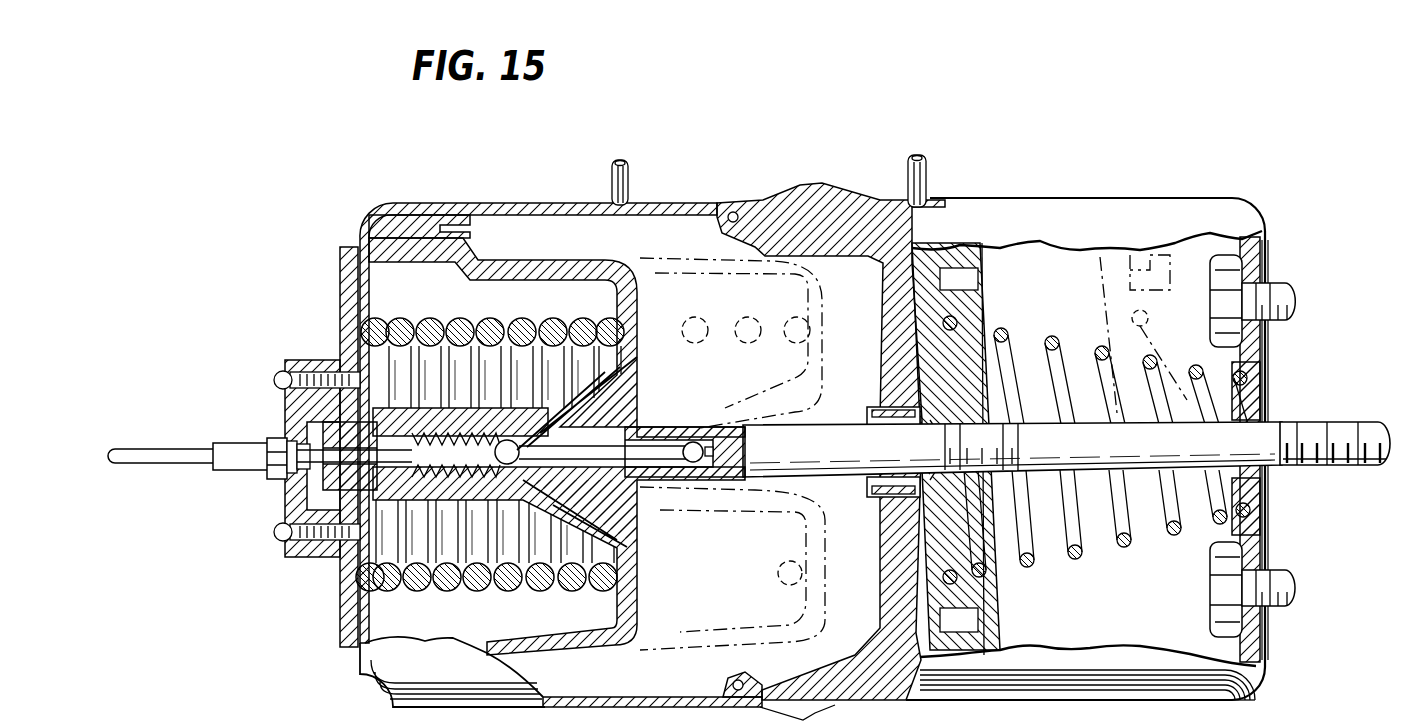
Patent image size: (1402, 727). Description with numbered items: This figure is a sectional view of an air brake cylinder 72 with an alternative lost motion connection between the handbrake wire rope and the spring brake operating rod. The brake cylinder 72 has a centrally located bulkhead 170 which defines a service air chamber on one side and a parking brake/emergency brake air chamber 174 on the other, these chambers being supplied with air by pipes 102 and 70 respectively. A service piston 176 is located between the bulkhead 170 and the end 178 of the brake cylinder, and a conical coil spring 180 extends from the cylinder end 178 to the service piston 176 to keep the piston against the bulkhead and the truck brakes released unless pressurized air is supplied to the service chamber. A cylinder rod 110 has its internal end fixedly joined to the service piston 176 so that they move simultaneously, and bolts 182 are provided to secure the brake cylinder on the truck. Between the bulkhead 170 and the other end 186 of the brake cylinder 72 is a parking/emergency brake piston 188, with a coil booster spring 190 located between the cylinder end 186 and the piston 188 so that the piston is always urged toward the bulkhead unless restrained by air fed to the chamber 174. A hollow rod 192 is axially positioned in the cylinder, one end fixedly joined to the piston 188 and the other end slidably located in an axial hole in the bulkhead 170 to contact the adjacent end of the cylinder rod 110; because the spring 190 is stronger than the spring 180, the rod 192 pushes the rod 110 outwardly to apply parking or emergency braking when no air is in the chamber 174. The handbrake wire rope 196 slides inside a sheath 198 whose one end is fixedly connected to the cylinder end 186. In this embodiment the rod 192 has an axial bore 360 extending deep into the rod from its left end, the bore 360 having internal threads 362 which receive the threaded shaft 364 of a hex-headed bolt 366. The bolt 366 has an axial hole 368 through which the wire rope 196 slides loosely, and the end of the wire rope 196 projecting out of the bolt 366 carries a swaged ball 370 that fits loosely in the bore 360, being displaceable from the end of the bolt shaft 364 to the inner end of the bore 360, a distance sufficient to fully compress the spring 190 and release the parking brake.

The brake cylinder 72 is at (745, 173).
The pipe 70 is at (616, 172).
The pipe 102 is at (927, 167).
The bulkhead 170 is at (897, 243).
The service piston 176 is at (950, 360).
The end of the brake cylinder 178 is at (1265, 501).
The bolts 182 is at (1285, 282).
The conical coil spring 180 is at (1080, 558).
The hollow rod 192 is at (802, 430).
The cylinder rod 110 is at (1313, 429).
The end of the brake cylinder 186 is at (362, 291).
The parking/emergency brake piston 188 is at (574, 272).
The parking brake/emergency brake air chamber 174 is at (690, 556).
The coil booster spring 190 is at (525, 325).
The threaded shaft 364 is at (433, 425).
The internal threads 362 is at (450, 482).
The axial hole 368 is at (395, 482).
The wire rope 196 is at (330, 474).
The bolt 366 is at (332, 428).
The sheath 198 is at (143, 453).
The ball 370 is at (597, 410).
The axial bore 360 is at (638, 427).